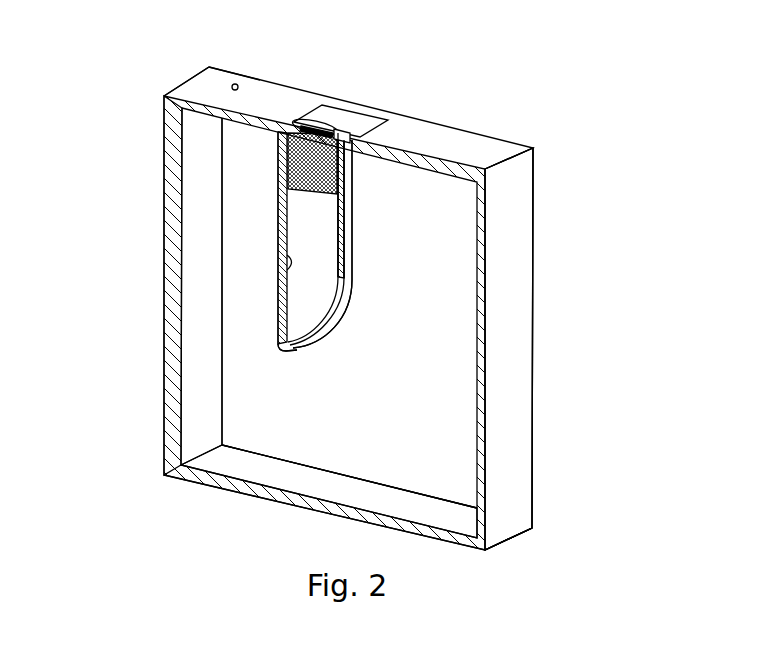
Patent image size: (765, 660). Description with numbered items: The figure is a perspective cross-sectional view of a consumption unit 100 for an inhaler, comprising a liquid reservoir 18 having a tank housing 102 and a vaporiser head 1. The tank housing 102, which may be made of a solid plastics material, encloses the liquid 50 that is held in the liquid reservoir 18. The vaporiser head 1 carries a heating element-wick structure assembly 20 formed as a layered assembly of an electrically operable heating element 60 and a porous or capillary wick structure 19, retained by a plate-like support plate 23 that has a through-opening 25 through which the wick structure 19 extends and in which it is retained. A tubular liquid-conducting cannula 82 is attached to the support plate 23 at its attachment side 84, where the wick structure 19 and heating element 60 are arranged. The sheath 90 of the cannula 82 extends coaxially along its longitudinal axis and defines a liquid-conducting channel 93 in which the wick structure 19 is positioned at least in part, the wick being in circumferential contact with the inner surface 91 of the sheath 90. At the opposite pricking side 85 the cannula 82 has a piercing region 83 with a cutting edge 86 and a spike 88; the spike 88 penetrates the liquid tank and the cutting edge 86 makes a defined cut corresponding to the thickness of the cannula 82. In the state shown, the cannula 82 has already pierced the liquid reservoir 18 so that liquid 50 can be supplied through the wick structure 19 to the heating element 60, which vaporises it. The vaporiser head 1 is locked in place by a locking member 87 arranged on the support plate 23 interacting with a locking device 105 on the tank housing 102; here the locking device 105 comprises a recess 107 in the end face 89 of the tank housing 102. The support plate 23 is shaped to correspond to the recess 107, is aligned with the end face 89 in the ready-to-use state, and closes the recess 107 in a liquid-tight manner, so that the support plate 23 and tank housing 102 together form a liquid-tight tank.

The vaporiser head 1 is at (358, 95).
The liquid reservoir 18 is at (507, 511).
The wick structure 19 is at (282, 155).
The heating element-wick structure assembly 20 is at (385, 119).
The support plate 23 is at (165, 97).
The through-opening 25 is at (340, 131).
The liquid 50 is at (427, 470).
The heating element 60 is at (312, 126).
The cannula 82 is at (313, 217).
The piercing region 83 is at (350, 250).
The attachment side 84 is at (278, 133).
The pricking side 85 is at (277, 315).
The cutting edge 86 is at (330, 331).
The locking member 87 is at (207, 67).
The spike 88 is at (265, 352).
The end face 89 is at (465, 142).
The sheath 90 is at (354, 292).
The inner surface 91 is at (290, 268).
The channel 93 is at (300, 313).
The consumption unit 100 is at (495, 557).
The tank housing 102 is at (488, 463).
The locking device 105 is at (236, 84).
The recess 107 is at (168, 112).